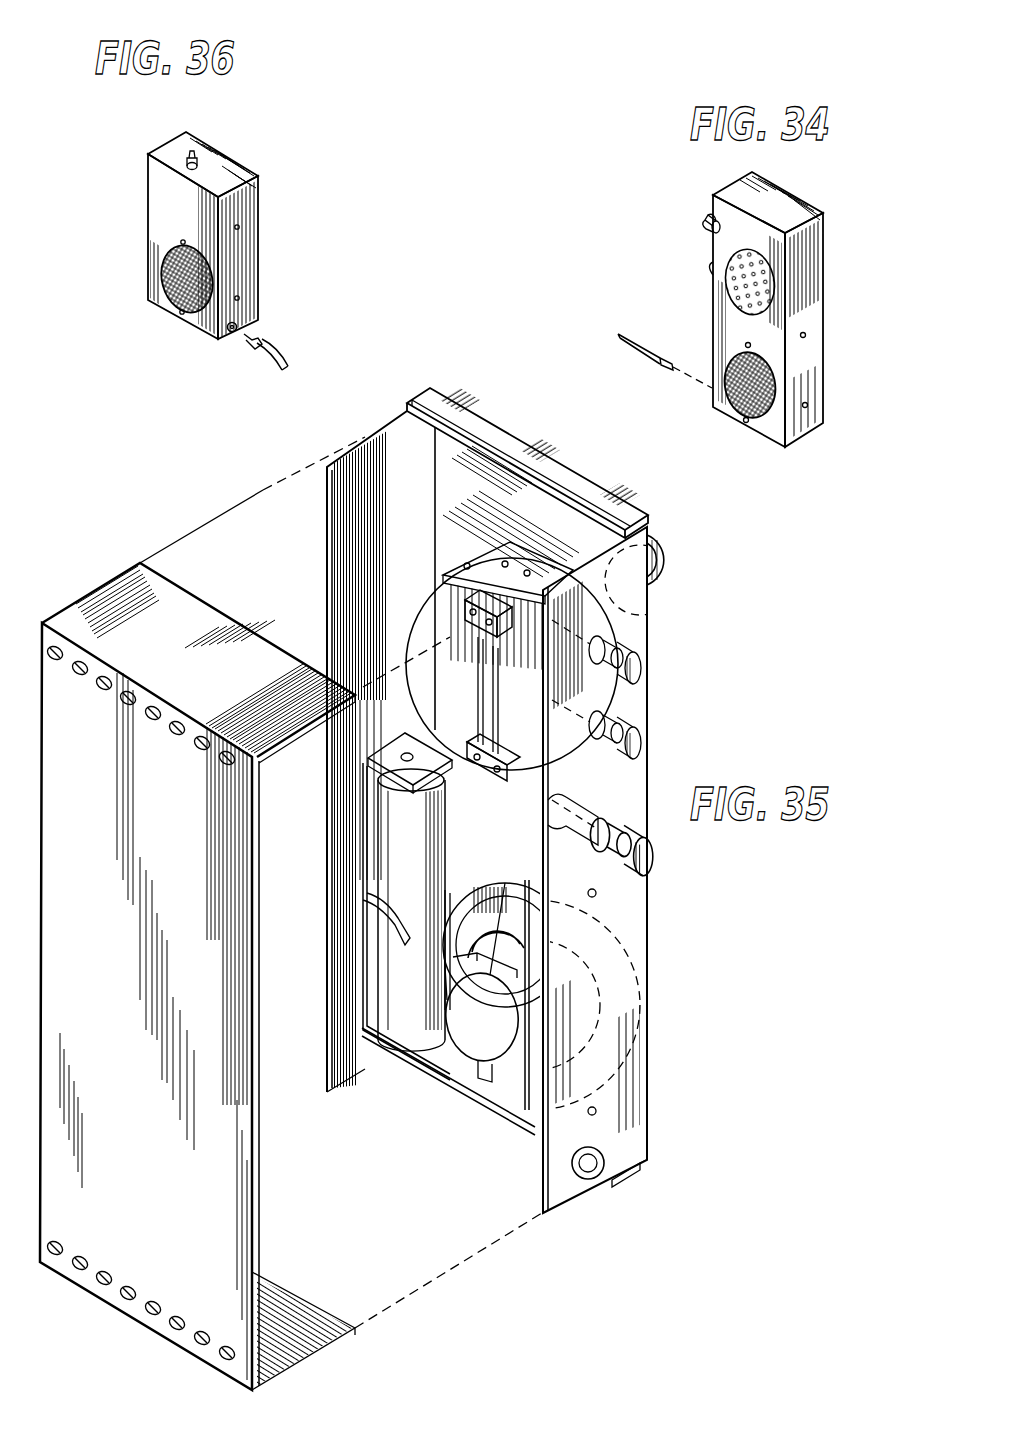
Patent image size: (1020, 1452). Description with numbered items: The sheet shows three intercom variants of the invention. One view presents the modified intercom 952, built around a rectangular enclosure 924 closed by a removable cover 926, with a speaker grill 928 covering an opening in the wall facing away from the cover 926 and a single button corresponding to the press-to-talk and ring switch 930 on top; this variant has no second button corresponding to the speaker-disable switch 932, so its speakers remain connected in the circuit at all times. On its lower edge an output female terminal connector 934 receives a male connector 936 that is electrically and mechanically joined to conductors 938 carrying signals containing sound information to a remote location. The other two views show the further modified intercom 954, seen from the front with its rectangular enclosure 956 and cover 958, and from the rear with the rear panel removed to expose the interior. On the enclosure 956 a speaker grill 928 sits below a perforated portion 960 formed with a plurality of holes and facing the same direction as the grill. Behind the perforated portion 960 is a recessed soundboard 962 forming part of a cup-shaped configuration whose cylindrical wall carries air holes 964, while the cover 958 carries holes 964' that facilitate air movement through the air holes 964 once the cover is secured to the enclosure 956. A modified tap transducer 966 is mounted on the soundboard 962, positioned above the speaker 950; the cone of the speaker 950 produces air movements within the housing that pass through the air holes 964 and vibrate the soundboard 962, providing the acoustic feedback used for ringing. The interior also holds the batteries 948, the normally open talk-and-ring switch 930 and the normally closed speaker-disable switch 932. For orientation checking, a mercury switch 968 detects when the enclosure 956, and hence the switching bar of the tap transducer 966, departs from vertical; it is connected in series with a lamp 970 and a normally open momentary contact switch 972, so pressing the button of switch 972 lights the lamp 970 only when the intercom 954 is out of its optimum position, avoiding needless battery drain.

In FIG. 36, the rectangular enclosure 924 is at (162, 200).
In FIG. 36, the cover 926 is at (258, 265).
In FIG. 36, the speaker grill 928 is at (162, 300).
In FIG. 34, the speaker grill 928 is at (770, 385).
In FIG. 36, the press-to-talk and ring momentary contact switch 930 is at (185, 160).
In FIG. 35, the press-to-talk and ring momentary contact switch 930 is at (640, 668).
In FIG. 35, the press-to-disable the speaker momentary contact switch 932 is at (640, 745).
In FIG. 36, the output female terminal connector 934 is at (230, 335).
In FIG. 36, the male connector 936 is at (250, 345).
In FIG. 34, the male connector 936 is at (670, 368).
In FIG. 36, the conductors 938 is at (280, 355).
In FIG. 34, the conductors 938 is at (638, 347).
In FIG. 35, the batteries 948 is at (378, 978).
In FIG. 35, the speaker 950 is at (440, 1055).
In FIG. 36, the modified intercom 952 is at (268, 218).
In FIG. 34, the intercom 954 is at (700, 200).
In FIG. 34, the rectangular enclosure 956 is at (808, 318).
In FIG. 34, the cover 958 is at (790, 205).
In FIG. 35, the cover 958 is at (248, 1205).
In FIG. 34, the perforated portion 960 is at (770, 283).
In FIG. 35, the recessed soundboard 962 is at (415, 610).
In FIG. 35, the air holes 964 is at (515, 529).
In FIG. 35, the holes 964' is at (141, 1003).
In FIG. 35, the modified tap transducer 966 is at (455, 705).
In FIG. 35, the mercury switch 968 is at (487, 1062).
In FIG. 34, the lamp 970 is at (706, 227).
In FIG. 35, the lamp 970 is at (672, 570).
In FIG. 34, the normally open momentary contact switch 972 is at (710, 268).
In FIG. 35, the normally open momentary contact switch 972 is at (652, 862).